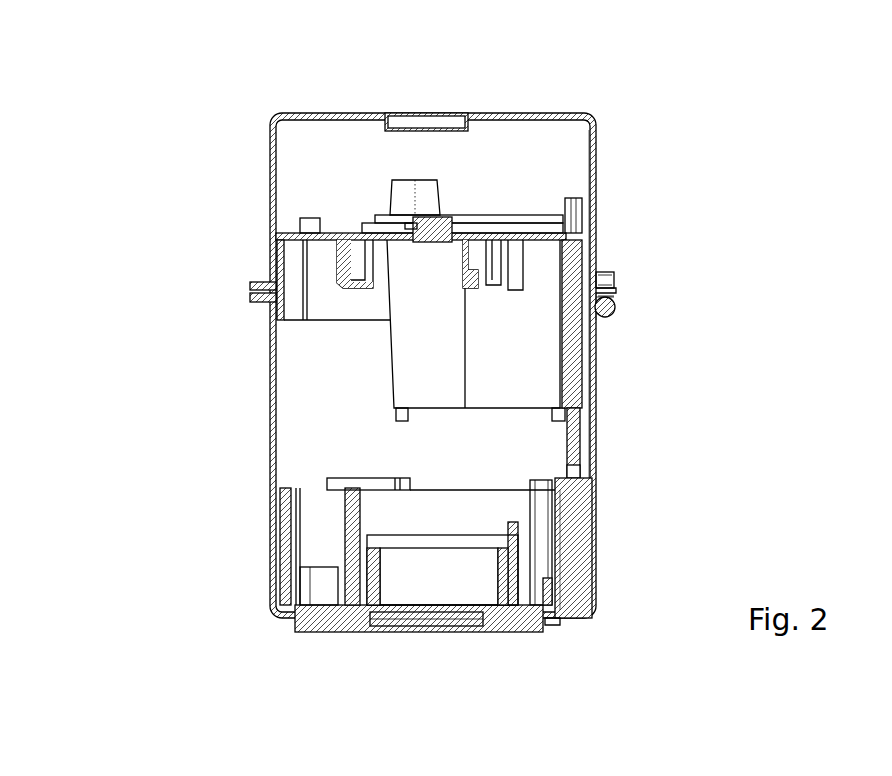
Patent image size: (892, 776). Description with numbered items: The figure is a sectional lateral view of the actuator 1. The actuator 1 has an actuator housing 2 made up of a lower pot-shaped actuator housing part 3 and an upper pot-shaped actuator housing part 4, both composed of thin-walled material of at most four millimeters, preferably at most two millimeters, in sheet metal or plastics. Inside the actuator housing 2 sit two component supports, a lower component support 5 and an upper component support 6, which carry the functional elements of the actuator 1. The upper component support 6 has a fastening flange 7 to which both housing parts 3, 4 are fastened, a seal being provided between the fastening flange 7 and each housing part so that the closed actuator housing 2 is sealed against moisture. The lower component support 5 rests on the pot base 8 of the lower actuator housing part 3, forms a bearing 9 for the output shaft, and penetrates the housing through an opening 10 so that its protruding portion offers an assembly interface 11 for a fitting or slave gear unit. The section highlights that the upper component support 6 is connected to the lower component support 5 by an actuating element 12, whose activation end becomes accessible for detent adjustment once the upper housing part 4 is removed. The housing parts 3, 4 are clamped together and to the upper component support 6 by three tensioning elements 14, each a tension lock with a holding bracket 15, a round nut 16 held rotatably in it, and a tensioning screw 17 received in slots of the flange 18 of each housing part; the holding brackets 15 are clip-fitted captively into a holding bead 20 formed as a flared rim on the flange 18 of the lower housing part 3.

The actuator 1 is at (482, 108).
The actuator housing 2 is at (215, 158).
The lower pot-shaped actuator housing part 3 is at (594, 547).
The upper pot-shaped actuator housing part 4 is at (593, 155).
The lower component support 5 is at (581, 572).
The upper component support 6 is at (280, 233).
The fastening flange 7 is at (253, 288).
The pot base 8 is at (582, 618).
The bearing 9 is at (373, 588).
The opening 10 is at (350, 623).
The assembly interface 11 is at (525, 628).
The actuating element 12 is at (596, 228).
The tensioning element 14 is at (683, 292).
The holding bracket 15 is at (605, 318).
The round nut 16 is at (610, 315).
The tensioning screw 17 is at (598, 280).
The flange 18 is at (600, 288).
The holding bead 20 is at (253, 297).